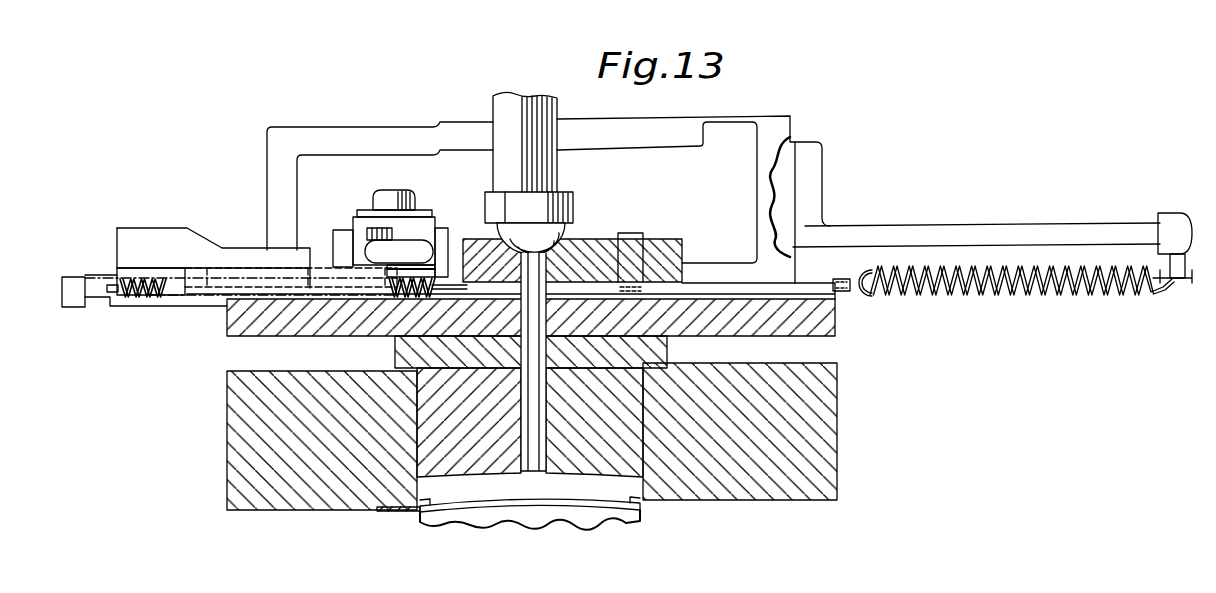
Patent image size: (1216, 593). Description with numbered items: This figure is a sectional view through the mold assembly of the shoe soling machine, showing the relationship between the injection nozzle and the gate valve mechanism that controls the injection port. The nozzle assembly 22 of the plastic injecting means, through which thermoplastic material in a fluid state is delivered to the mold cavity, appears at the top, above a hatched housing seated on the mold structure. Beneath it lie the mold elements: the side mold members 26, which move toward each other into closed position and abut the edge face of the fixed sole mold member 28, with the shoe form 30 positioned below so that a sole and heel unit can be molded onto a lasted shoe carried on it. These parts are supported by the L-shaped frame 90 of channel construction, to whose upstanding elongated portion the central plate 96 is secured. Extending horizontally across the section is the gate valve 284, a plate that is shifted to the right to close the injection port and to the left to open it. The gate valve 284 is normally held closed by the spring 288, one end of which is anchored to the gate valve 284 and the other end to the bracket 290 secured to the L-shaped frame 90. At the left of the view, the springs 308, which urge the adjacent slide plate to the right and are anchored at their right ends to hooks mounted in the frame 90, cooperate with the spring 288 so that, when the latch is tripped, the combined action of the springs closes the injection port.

The nozzle assembly 22 is at (556, 188).
The side mold members 26 is at (235, 417).
The sole mold member 28 is at (577, 468).
The shoe form 30 is at (502, 518).
The L-shaped frame 90 is at (772, 117).
The central plate 96 is at (663, 345).
The gate valve 284 is at (812, 283).
The spring 288 is at (995, 294).
The bracket 290 is at (1007, 225).
The springs 308 is at (150, 303).